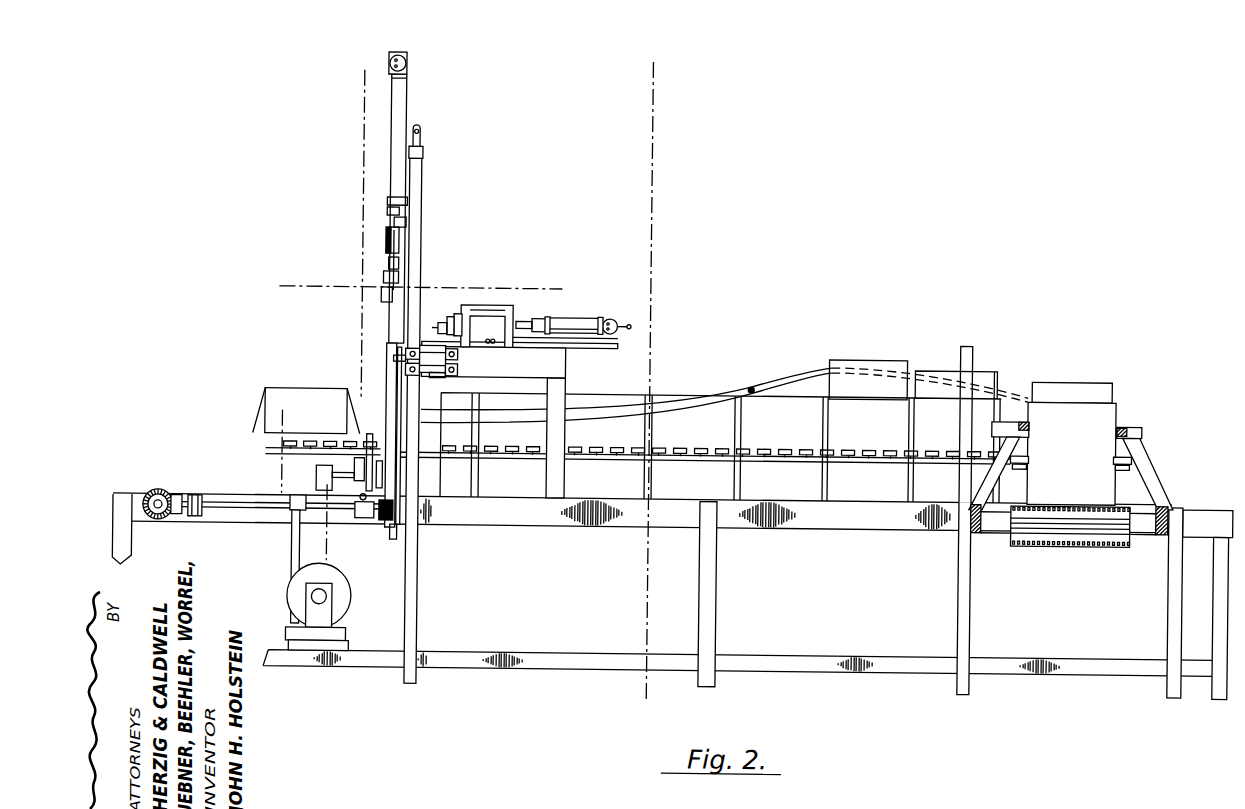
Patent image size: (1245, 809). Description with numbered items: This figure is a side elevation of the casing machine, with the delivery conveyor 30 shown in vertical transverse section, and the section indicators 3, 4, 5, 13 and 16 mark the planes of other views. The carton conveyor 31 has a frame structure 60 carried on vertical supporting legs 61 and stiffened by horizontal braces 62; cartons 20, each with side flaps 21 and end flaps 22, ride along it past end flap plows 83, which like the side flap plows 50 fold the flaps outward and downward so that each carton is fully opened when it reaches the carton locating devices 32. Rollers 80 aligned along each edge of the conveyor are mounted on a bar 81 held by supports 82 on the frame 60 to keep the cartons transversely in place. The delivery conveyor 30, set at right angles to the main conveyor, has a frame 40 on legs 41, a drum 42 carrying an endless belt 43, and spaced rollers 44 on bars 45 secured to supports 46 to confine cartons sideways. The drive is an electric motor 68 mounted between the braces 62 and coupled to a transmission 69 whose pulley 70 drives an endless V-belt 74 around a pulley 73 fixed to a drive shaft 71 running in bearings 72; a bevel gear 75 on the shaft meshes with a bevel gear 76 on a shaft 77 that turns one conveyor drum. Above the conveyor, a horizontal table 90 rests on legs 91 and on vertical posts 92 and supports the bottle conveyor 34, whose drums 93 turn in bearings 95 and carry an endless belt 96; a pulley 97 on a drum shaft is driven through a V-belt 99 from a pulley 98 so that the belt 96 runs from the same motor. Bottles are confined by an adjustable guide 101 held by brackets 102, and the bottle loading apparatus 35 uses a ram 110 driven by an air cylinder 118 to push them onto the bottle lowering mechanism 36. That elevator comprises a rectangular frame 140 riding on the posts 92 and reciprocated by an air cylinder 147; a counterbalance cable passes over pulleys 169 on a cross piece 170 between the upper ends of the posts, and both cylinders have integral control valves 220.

The section line 3- 3 is at (655, 73).
The section line 4- 4 is at (383, 72).
The section line 5- 5 is at (282, 308).
The infeed conveyor 13 is at (310, 445).
The section line 16- 16 is at (304, 423).
The carton 20 is at (1078, 378).
The side flaps 21 is at (1025, 418).
The end flaps 22 is at (689, 400).
The delivery conveyor 30 is at (1117, 550).
The case conveyor 31 is at (777, 531).
The carton locating devices 32 is at (333, 466).
The bottle conveyor 34 is at (434, 322).
The bottle loading apparatus 35 is at (530, 293).
The bottle lowering mechanism 36 is at (378, 298).
The frame 40 is at (974, 516).
The legs 41 is at (966, 583).
The drums 42 is at (1048, 526).
The endless horizontal belt 43 is at (1068, 543).
The spaced rollers 44 is at (1113, 456).
The bars 45 is at (1113, 463).
The supports 46 is at (1000, 446).
The side flap plows 50 is at (1019, 428).
The frame structure 60 is at (837, 516).
The vertical supporting legs 61 is at (122, 528).
The horizontally extending braces 62 is at (325, 664).
The electric motor 68 is at (345, 590).
The transmission 69 is at (335, 604).
The pulley 70 is at (292, 617).
The drive shaft 71 is at (234, 505).
The bearings 72 is at (195, 500).
The pulley 73 is at (290, 514).
The endless V-belt 74 is at (292, 569).
The bevel gear 75 is at (176, 522).
The intermeshing bevel gear 76 is at (154, 496).
The shaft 77 is at (159, 521).
The conveyor rollers 80 is at (762, 448).
The bar 81 is at (773, 461).
The supports 82 is at (972, 351).
The end flap plows 83 is at (813, 375).
The rectangular horizontal table 90 is at (557, 361).
The legs 91 is at (560, 387).
The vertical posts 92 is at (418, 197).
The drums 93 is at (478, 282).
The bearings 95 is at (459, 358).
The endless belt 96 is at (435, 378).
The pulley 97 is at (382, 354).
The pulley 98 is at (395, 515).
The endless V-belt 99 is at (383, 382).
The elongated guide 101 is at (458, 297).
The bracket 102 is at (481, 300).
The ram 110 is at (499, 298).
The air cylinder 118 is at (570, 323).
The rectangular frame 140 is at (405, 242).
The air cylinder 147 is at (392, 106).
The pulleys 169 is at (417, 131).
The cross piece 170 is at (419, 151).
The control valves 220 is at (404, 66).